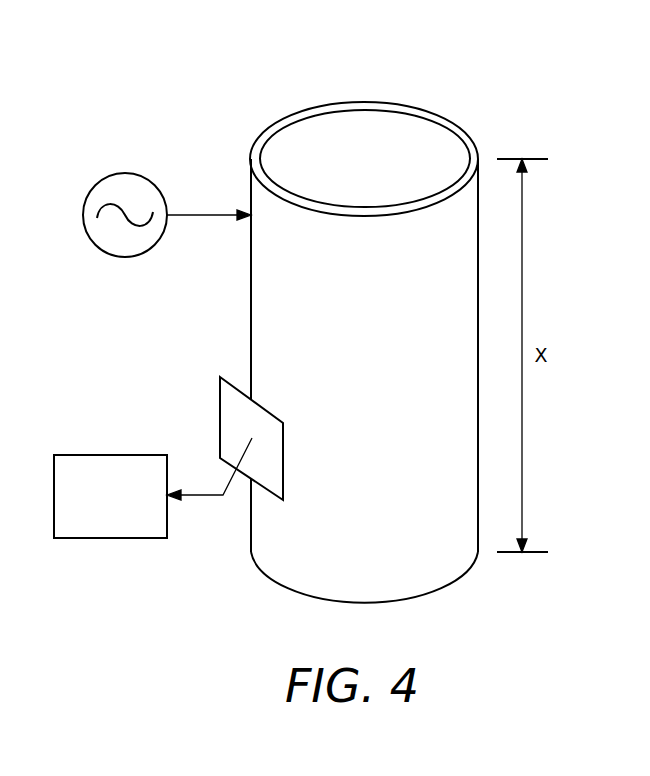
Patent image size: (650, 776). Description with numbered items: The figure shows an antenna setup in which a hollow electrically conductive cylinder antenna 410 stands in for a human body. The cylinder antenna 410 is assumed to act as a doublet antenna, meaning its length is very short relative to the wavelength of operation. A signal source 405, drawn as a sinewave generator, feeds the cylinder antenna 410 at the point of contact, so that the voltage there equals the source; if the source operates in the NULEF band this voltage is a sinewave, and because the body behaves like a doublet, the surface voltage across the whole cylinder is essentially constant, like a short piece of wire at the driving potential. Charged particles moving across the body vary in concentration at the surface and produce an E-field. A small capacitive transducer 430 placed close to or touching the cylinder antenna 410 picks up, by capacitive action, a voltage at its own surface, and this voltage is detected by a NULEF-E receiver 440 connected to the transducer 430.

The signal source 405 is at (115, 172).
The hollow conductive cylinder antenna 410 is at (302, 110).
The capacitive transducer 430 is at (235, 408).
The NULEF-E receiver 440 is at (108, 540).